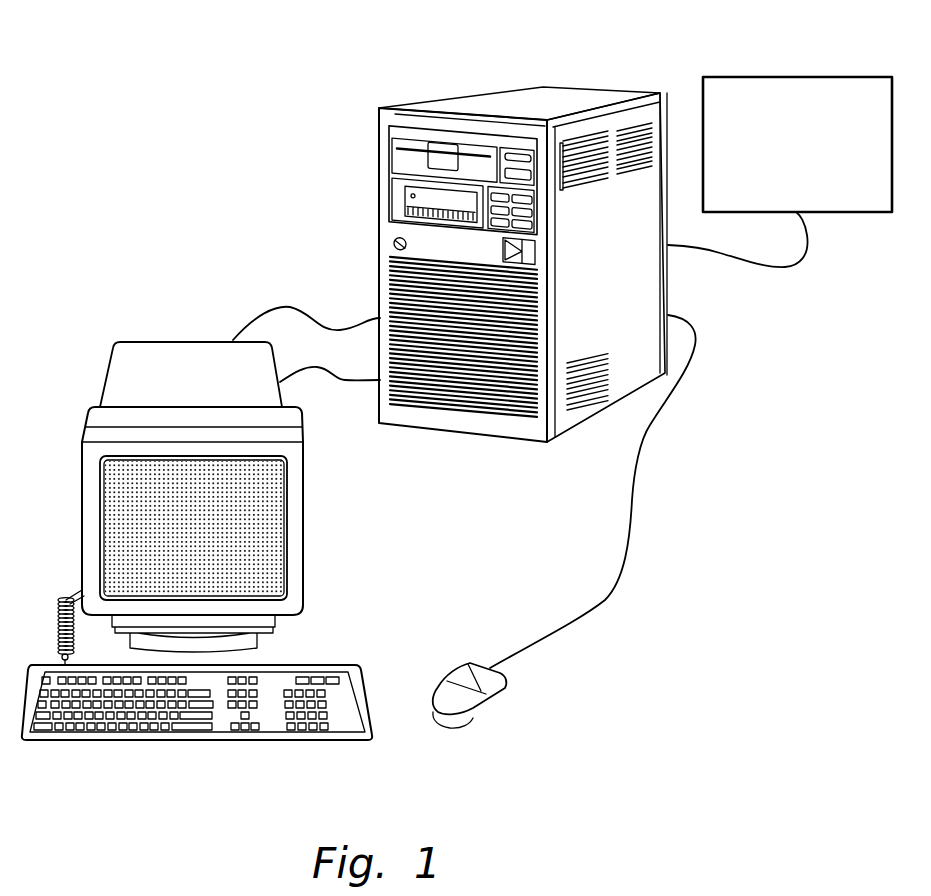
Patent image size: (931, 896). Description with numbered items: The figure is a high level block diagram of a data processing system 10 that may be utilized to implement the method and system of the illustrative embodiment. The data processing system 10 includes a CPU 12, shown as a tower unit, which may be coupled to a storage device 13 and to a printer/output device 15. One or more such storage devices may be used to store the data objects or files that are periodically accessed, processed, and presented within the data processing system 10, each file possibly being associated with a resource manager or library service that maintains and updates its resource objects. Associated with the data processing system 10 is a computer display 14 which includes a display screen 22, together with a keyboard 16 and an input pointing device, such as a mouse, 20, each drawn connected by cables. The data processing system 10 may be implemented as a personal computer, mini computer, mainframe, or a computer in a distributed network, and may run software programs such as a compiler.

The data processing system 10 is at (172, 166).
The CPU 12 is at (380, 226).
The storage device 13 is at (380, 280).
The computer display 14 is at (186, 356).
The printer/output device 15 is at (793, 90).
The keyboard 16 is at (220, 738).
The mouse 20 is at (473, 715).
The display screen 22 is at (258, 534).